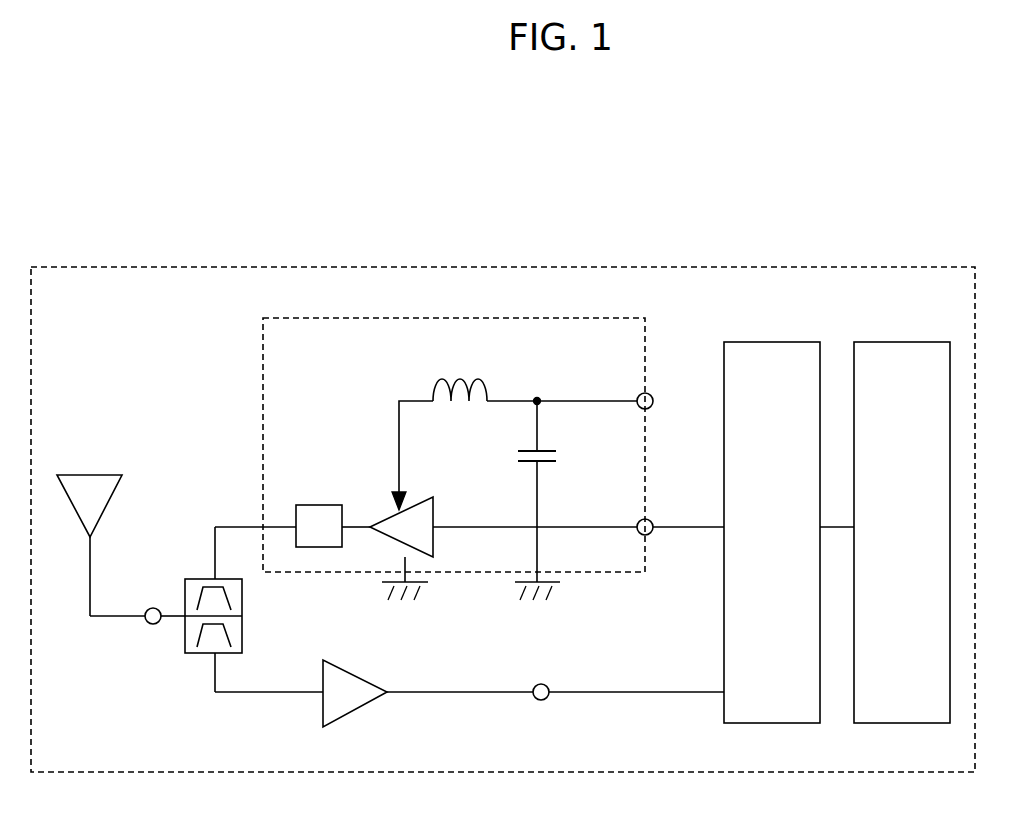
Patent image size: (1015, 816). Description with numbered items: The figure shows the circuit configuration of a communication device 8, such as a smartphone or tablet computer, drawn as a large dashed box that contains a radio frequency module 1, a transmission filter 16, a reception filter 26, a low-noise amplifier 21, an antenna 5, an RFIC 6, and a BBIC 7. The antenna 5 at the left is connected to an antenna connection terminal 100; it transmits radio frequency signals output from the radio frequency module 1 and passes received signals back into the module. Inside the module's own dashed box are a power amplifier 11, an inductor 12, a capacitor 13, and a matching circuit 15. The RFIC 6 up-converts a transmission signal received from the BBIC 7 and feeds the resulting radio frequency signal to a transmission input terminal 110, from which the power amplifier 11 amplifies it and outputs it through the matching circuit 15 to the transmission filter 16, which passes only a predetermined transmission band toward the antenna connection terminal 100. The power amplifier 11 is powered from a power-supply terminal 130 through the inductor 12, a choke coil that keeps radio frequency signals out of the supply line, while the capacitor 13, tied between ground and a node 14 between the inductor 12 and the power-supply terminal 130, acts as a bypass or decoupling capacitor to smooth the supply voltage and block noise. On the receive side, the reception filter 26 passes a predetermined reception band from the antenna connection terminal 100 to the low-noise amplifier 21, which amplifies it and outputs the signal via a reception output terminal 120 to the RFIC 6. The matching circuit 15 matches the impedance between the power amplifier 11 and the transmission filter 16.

The radio frequency module 1 is at (507, 319).
The antenna 5 is at (86, 475).
The RFIC 6 is at (757, 342).
The BBIC 7 is at (893, 342).
The communication device 8 is at (915, 268).
The power amplifier 11 is at (418, 500).
The inductor 12 is at (482, 385).
The capacitor 13 is at (549, 455).
The node 14 is at (542, 396).
The matching circuit 15 is at (308, 504).
The transmission filter 16 is at (218, 578).
The low-noise amplifier 21 is at (353, 710).
The reception filter 26 is at (230, 655).
The antenna connection terminal 100 is at (149, 624).
The transmission input terminal 110 is at (650, 534).
The reception output terminal 120 is at (547, 700).
The power-supply terminal 130 is at (651, 394).